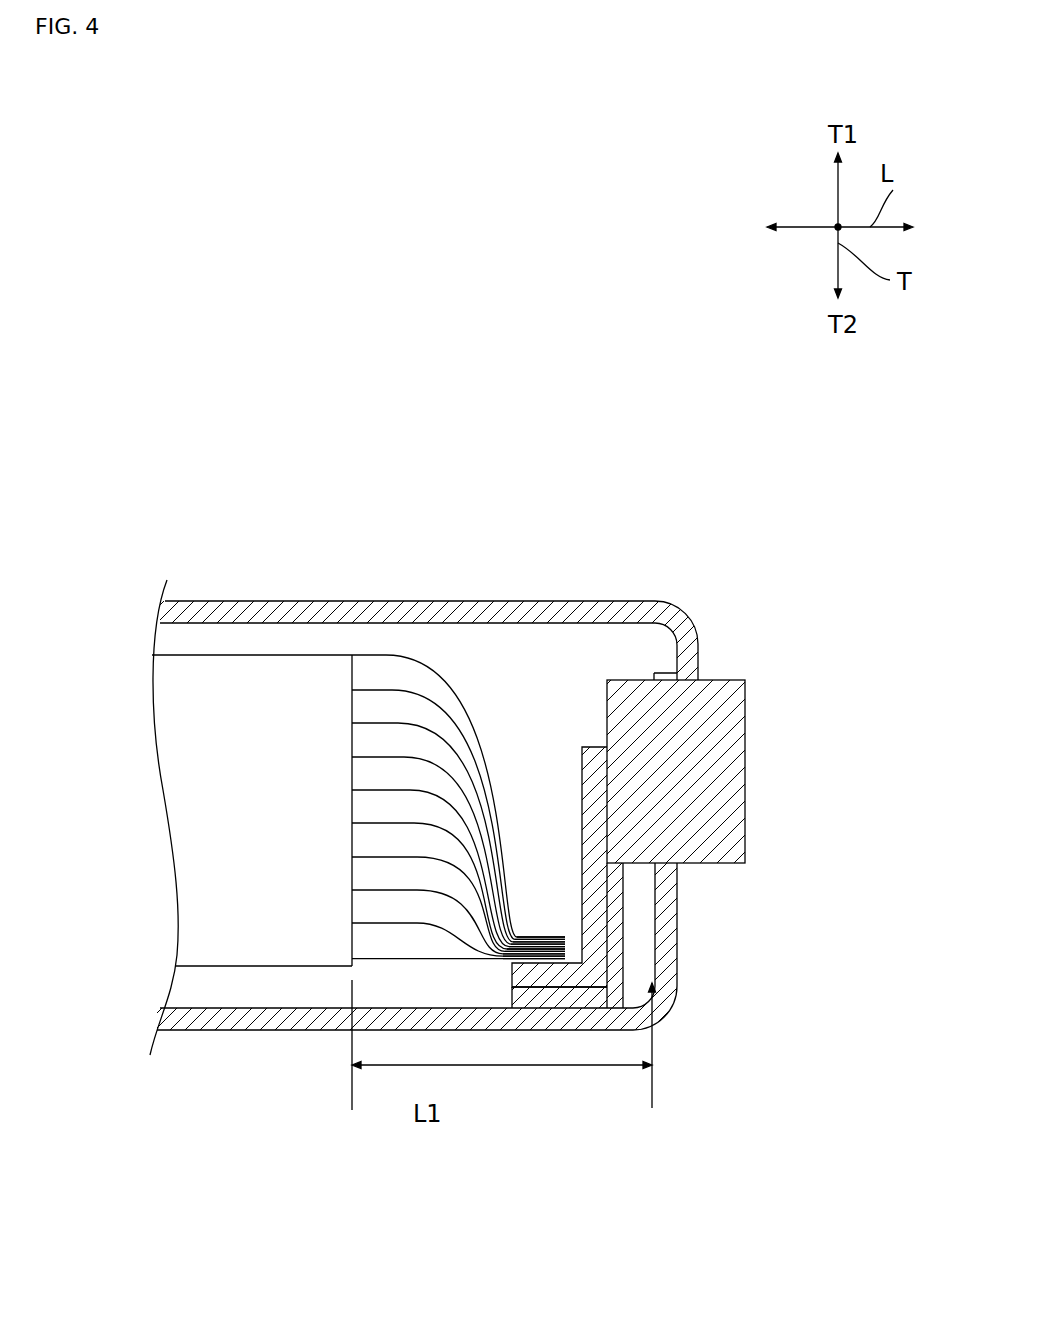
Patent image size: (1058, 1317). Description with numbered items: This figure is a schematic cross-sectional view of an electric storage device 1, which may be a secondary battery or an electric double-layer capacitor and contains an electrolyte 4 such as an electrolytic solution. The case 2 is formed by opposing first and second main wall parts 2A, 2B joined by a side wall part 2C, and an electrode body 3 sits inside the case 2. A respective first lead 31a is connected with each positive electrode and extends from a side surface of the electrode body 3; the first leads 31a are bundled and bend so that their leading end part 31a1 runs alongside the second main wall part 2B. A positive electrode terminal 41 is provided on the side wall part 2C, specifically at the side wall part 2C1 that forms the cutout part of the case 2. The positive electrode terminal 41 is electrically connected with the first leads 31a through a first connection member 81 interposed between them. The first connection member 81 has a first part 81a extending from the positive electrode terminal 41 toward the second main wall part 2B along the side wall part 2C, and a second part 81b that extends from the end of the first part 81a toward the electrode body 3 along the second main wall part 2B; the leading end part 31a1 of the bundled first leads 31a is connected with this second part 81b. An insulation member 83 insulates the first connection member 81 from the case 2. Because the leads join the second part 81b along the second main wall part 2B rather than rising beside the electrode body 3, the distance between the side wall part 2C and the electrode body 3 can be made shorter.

The electric storage device 1 is at (575, 513).
The case 2 is at (529, 815).
The first main wall part 2A is at (342, 601).
The second main wall part 2B is at (224, 1030).
The side wall part 2C is at (686, 948).
The side wall part forming the cutout part 2C1 is at (704, 653).
The electrode body 3 is at (282, 948).
The electrolyte 4 is at (207, 645).
The first lead 31a is at (393, 645).
The leading end part 31a1 is at (552, 925).
The positive electrode terminal 41 is at (745, 758).
The first connection member 81 is at (574, 992).
The first part 81a is at (620, 913).
The second part 81b is at (529, 1012).
The insulation member 83 is at (625, 971).